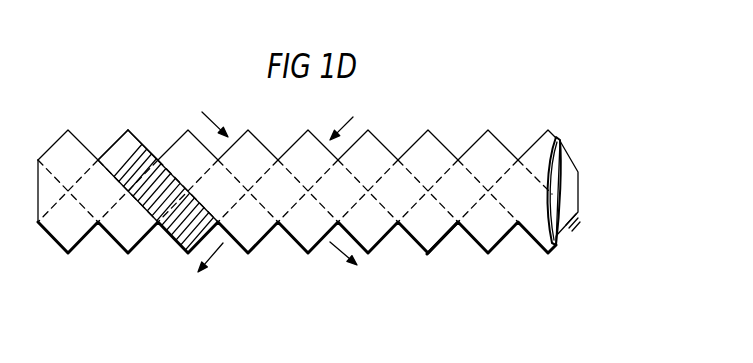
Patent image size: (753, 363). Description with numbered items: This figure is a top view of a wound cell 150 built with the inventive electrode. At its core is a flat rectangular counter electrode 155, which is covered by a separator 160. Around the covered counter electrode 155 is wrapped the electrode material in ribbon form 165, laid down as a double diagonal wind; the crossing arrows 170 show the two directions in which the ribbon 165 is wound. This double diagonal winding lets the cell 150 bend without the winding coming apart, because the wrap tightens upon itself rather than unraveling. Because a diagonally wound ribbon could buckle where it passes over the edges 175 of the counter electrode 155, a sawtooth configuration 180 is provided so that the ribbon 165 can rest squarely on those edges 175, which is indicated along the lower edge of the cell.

The wound cell 150 is at (592, 228).
The counter electrode 155 is at (591, 193).
The separator 160 is at (552, 150).
The material in ribbon form 165 is at (138, 147).
The arrows 170 is at (353, 194).
The edges 175 is at (115, 140).
The sawtooth configuration 180 is at (453, 233).